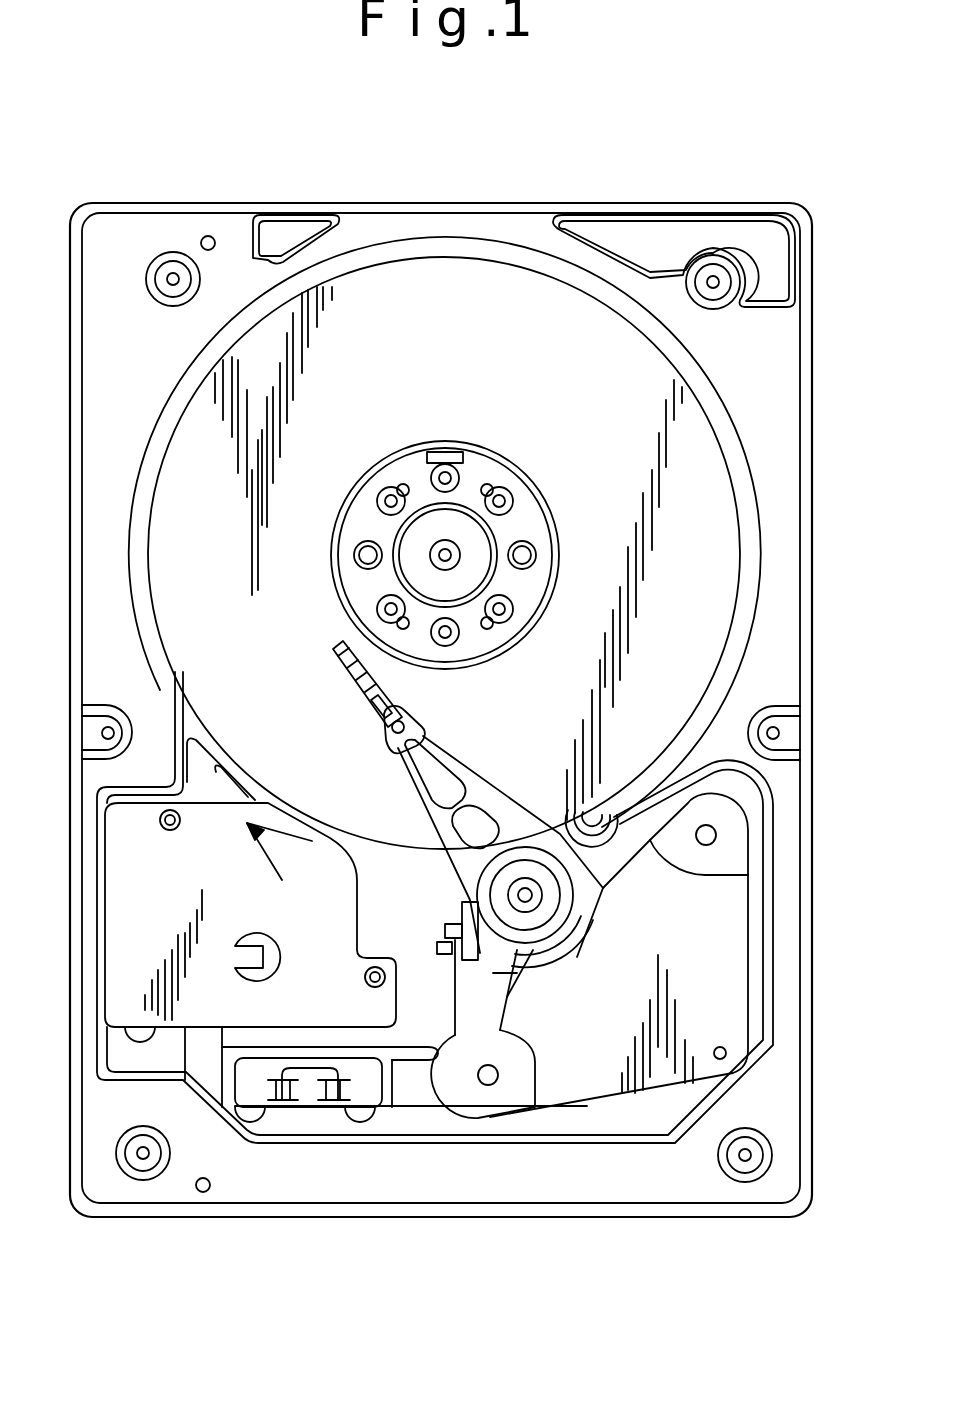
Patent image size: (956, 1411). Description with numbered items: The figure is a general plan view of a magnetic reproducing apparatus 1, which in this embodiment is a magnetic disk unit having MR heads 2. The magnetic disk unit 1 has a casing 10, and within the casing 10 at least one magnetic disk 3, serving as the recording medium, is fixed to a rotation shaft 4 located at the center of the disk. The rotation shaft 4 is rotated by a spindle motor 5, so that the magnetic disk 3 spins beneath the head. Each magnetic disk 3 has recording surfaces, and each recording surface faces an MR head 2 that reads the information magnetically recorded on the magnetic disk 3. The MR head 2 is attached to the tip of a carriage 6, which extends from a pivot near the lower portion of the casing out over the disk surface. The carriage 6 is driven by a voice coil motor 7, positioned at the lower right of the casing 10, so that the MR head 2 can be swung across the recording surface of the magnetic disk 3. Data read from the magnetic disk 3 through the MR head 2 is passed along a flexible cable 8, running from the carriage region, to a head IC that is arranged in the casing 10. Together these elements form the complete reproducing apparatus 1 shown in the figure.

The magnetic reproducing apparatus 1 is at (624, 188).
The casing 10 is at (470, 201).
The magnetic disk 3 is at (700, 410).
The rotation shaft 4 is at (448, 548).
The spindle motor 5 is at (515, 497).
The MR head 2 is at (331, 649).
The carriage 6 is at (490, 797).
The flexible cable 8 is at (430, 1050).
The voice coil motor 7 is at (568, 1075).